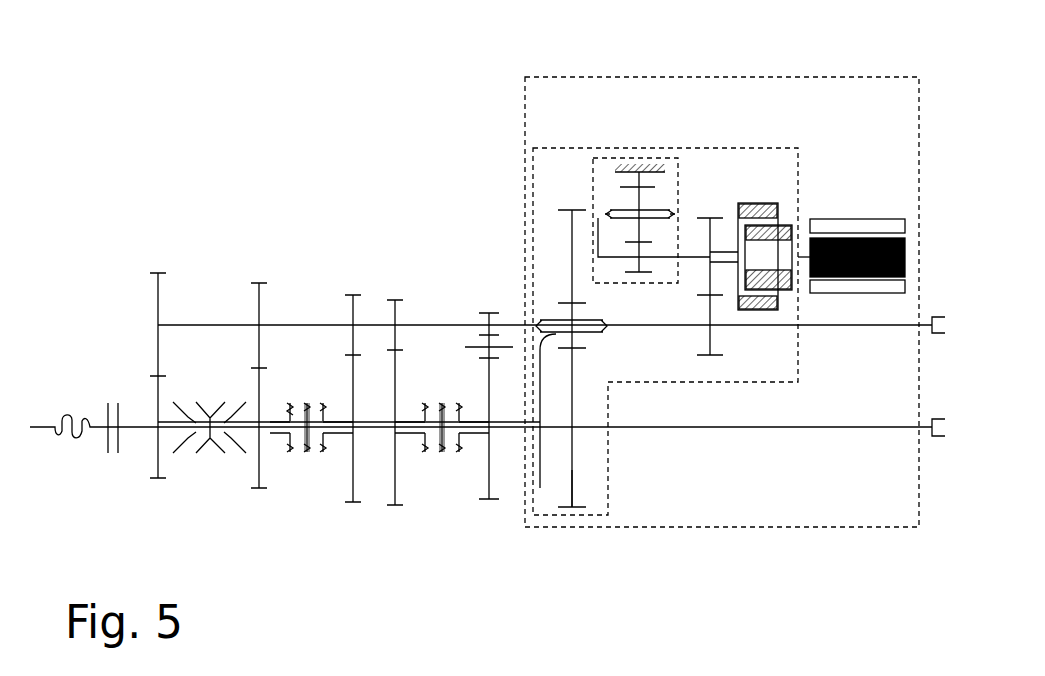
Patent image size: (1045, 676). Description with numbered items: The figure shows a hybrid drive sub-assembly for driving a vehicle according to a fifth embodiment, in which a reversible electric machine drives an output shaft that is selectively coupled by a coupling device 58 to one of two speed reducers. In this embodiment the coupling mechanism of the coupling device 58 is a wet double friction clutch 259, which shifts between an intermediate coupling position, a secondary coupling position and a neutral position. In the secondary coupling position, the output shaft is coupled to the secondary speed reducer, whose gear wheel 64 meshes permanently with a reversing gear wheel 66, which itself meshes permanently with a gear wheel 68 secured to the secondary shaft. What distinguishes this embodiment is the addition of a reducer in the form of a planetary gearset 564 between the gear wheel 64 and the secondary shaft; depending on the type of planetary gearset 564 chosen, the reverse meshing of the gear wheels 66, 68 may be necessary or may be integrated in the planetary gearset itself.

The coupling device 58 is at (608, 438).
The gear wheel 64 is at (572, 243).
The reversing gear wheel 66 is at (540, 488).
The gear wheel 68 is at (572, 477).
The wet double friction clutch 259 is at (765, 172).
The planetary gearset 564 is at (622, 158).